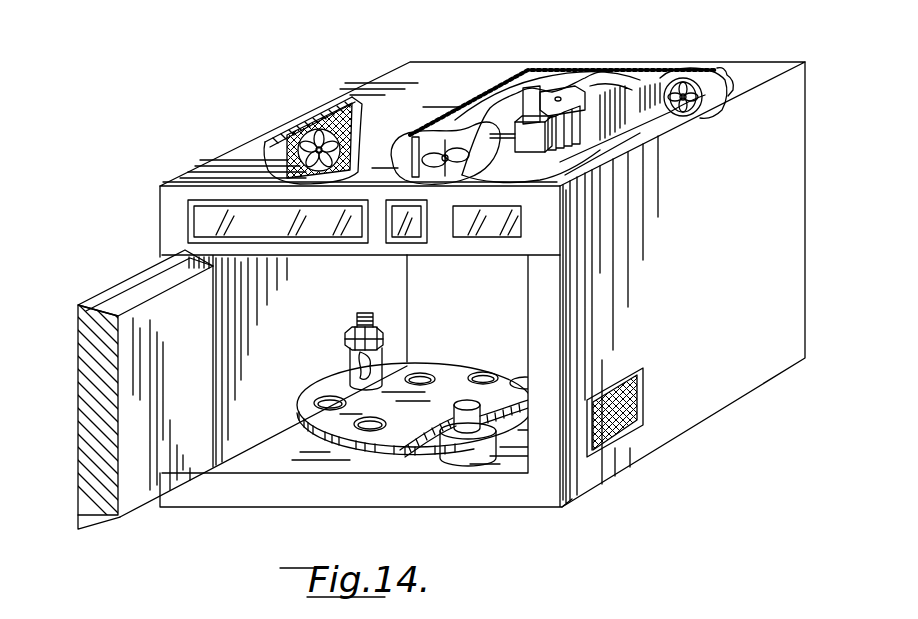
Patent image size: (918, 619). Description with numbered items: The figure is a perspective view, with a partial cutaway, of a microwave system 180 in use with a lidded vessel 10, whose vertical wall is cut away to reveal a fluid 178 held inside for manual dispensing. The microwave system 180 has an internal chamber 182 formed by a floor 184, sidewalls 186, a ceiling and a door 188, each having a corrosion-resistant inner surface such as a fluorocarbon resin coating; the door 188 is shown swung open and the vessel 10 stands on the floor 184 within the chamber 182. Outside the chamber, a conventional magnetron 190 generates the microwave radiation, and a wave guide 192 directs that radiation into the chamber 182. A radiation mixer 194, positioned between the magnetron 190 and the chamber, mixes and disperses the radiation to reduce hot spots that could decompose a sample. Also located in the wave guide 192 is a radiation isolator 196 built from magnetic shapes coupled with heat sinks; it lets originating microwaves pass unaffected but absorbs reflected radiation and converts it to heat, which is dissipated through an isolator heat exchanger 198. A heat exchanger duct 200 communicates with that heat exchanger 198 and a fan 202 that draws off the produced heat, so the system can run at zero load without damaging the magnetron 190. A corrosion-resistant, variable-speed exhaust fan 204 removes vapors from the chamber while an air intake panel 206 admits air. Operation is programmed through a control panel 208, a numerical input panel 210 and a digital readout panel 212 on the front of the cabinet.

The lidded vessel 10 is at (323, 349).
The fluid 178 is at (362, 373).
The microwave system 180 is at (395, 78).
The internal chamber 182 is at (321, 444).
The floor 184 is at (348, 453).
The sidewalls 186 is at (458, 323).
The door 188 is at (90, 410).
The magnetron 190 is at (583, 108).
The wave guide 192 is at (462, 125).
The radiation mixer 194 is at (428, 155).
The radiation isolator 196 is at (528, 125).
The isolator heat exchanger 198 is at (555, 95).
The heat exchanger duct 200 is at (664, 98).
The fan 202 is at (694, 80).
The exhaust fan 204 is at (322, 116).
The air intake panel 206 is at (640, 393).
The control panel 208 is at (507, 233).
The numerical input panel 210 is at (408, 233).
The digital readout panel 212 is at (200, 222).